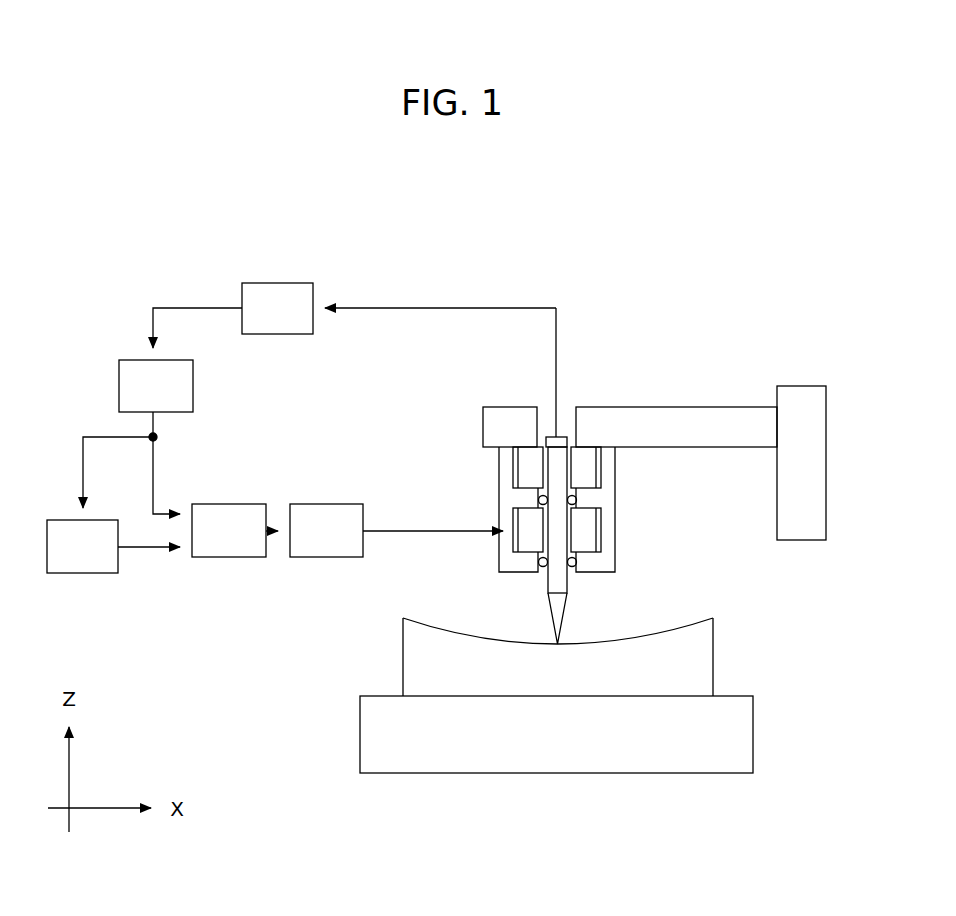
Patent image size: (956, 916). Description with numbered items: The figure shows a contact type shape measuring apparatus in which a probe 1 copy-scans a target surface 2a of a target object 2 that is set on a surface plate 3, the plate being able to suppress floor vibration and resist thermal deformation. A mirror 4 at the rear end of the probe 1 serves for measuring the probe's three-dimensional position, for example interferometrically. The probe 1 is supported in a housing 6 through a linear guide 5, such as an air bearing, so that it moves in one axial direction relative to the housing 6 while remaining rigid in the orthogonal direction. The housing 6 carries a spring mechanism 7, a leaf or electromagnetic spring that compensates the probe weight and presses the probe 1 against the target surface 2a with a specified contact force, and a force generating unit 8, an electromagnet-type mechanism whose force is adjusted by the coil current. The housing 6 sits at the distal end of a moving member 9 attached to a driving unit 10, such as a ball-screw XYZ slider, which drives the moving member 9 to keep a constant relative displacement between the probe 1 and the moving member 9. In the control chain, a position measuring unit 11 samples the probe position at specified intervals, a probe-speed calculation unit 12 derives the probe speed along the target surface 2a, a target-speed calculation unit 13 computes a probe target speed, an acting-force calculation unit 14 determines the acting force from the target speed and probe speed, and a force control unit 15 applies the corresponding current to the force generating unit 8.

The probe 1 is at (563, 603).
The target object 2 is at (702, 650).
The target surface 2a is at (678, 623).
The surface plate 3 is at (740, 727).
The mirror 4 is at (554, 440).
The linear guide 5 is at (577, 501).
The housing 6 is at (608, 470).
The spring mechanism 7 is at (585, 453).
The force generating unit 8 is at (532, 545).
The moving member 9 is at (693, 410).
The driving unit 10 is at (815, 420).
The position measuring unit 11 is at (268, 288).
The probe-speed calculation unit 12 is at (141, 366).
The target-speed calculation unit 13 is at (72, 525).
The acting-force calculation unit 14 is at (228, 553).
The force control unit 15 is at (325, 553).